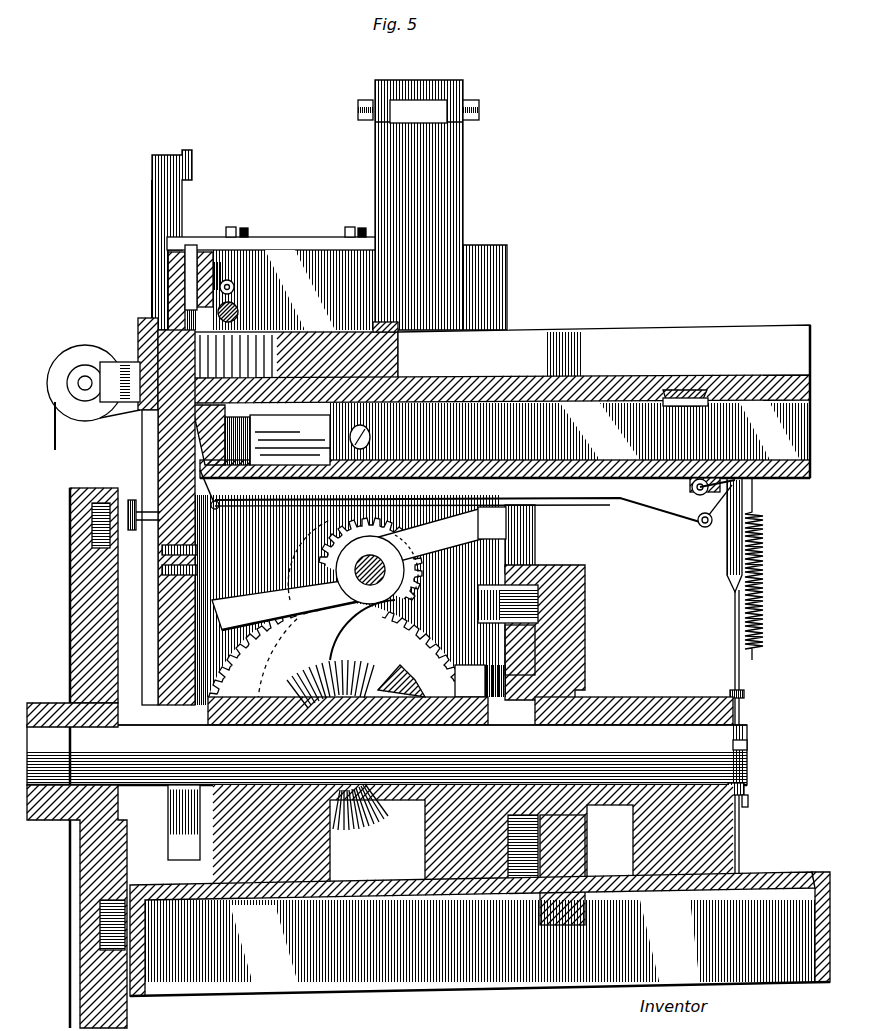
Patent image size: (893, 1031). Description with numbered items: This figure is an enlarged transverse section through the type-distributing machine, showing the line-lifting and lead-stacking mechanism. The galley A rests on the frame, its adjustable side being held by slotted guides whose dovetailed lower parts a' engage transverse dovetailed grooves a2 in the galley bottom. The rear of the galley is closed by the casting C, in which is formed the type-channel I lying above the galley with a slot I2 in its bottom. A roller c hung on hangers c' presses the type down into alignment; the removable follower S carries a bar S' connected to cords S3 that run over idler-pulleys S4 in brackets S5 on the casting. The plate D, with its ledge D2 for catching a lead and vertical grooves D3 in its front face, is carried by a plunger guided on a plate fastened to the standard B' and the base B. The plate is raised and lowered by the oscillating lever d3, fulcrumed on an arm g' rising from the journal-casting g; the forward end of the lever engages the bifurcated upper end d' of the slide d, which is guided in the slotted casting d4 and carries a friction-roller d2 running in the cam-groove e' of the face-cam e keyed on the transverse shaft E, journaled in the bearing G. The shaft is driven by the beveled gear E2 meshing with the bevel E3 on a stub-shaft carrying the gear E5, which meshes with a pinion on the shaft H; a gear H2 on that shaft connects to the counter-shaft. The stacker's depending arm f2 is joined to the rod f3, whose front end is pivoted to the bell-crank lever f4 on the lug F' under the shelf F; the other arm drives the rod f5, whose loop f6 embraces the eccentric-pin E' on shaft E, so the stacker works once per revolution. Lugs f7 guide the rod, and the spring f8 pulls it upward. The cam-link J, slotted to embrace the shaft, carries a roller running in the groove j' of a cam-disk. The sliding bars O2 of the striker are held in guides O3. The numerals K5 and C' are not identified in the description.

The column K5 is at (388, 80).
The sliding bars O2 is at (176, 144).
The guides O3 is at (152, 197).
The type-channel I is at (200, 250).
The casting C is at (173, 292).
The slot I2 is at (187, 307).
The hangers c' is at (234, 287).
The roller c is at (238, 309).
The follower S is at (295, 343).
The bar S' is at (390, 317).
The cords S3 is at (135, 346).
The idler-pulleys S4 is at (93, 397).
The brackets S5 is at (120, 421).
The galley A is at (500, 387).
The lower parts of slotted guides a' is at (478, 406).
The transverse dovetailed grooves a2 is at (706, 392).
The ledge D2 is at (230, 439).
The gear H2 is at (192, 435).
The shelf F is at (660, 446).
The lug F' is at (705, 463).
The plate D is at (170, 462).
The vertical grooves D3 is at (196, 552).
The depending arm f2 is at (212, 499).
The groove j' is at (100, 595).
The journal-casting g is at (338, 738).
The oscillating lever d3 is at (293, 575).
The shaft H is at (396, 556).
The arm g' is at (355, 630).
The rod f3 is at (457, 513).
The bell-crank lever f4 is at (686, 490).
The rod f5 is at (717, 535).
The spring f8 is at (762, 569).
The loop f6 is at (745, 735).
The bifurcated upper end d' is at (536, 539).
The standard B' is at (516, 522).
The friction-roller d2 is at (585, 580).
The cam-groove e' is at (549, 604).
The slide d is at (497, 650).
The gear E5 is at (477, 681).
The face-cam e is at (603, 658).
The beveled gear E2 is at (308, 725).
The bearing G is at (680, 697).
The bevel E3 is at (356, 680).
The transverse shaft E is at (387, 755).
The eccentric-pin E' is at (753, 745).
The nut C' is at (738, 785).
The lugs f7 is at (751, 805).
The cam-link J is at (77, 758).
The slotted casting d4 is at (535, 870).
The base B is at (480, 921).